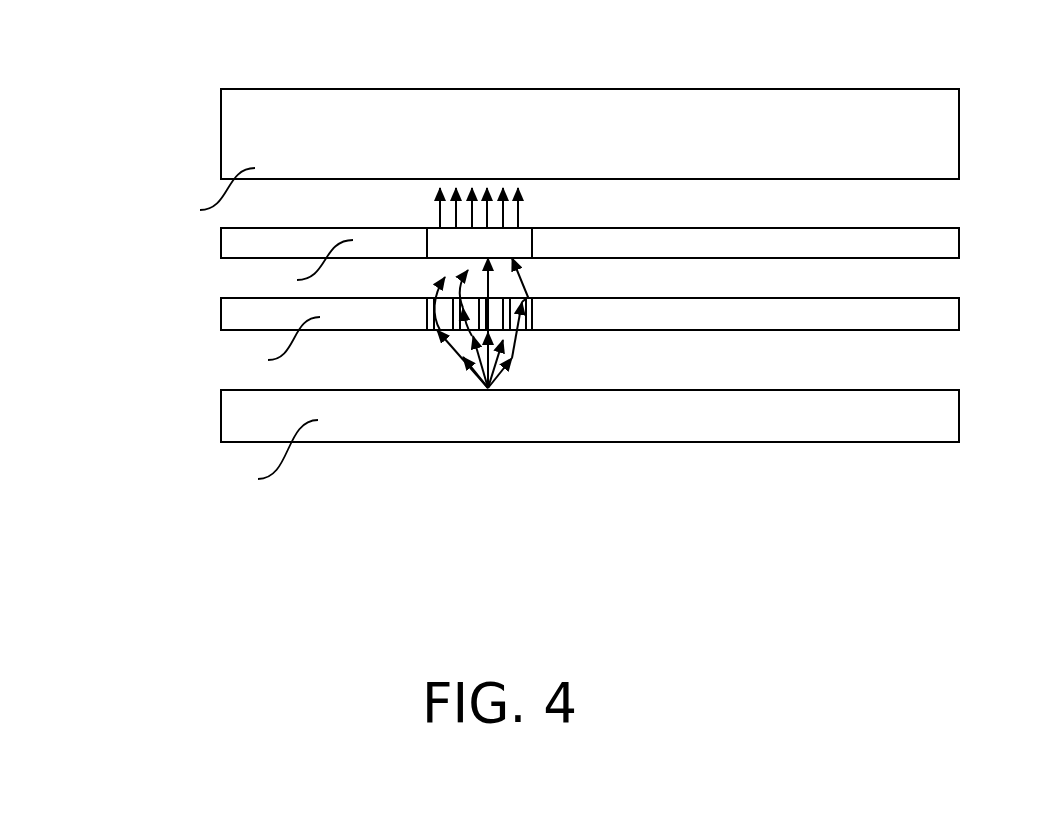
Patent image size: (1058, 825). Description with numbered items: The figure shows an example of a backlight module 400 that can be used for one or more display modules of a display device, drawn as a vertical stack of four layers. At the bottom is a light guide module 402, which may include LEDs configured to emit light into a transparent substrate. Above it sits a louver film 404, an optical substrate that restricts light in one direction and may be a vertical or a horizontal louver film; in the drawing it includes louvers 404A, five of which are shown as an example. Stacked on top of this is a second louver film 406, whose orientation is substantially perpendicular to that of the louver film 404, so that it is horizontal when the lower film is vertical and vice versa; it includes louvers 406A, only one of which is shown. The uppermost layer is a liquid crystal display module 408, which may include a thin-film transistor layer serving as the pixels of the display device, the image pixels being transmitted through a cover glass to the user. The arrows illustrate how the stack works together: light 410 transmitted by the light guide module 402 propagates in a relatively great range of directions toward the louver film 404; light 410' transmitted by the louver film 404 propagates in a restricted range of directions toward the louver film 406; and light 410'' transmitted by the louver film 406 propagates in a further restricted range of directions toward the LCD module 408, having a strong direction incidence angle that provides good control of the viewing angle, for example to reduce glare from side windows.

The backlight module 400 is at (943, 36).
The light guide module 402 is at (938, 426).
The louver film 404 is at (938, 326).
The louvers 404A is at (532, 323).
The louver film 406 is at (939, 256).
The louvers 406A is at (532, 243).
The liquid crystal display (LCD) module 408 is at (939, 138).
The light 410 is at (525, 359).
The light 410' is at (530, 308).
The light 410'' is at (529, 204).